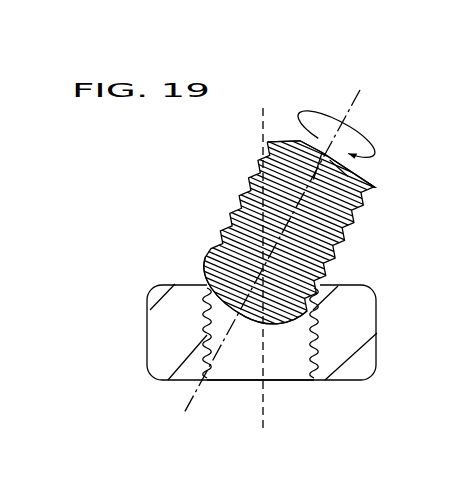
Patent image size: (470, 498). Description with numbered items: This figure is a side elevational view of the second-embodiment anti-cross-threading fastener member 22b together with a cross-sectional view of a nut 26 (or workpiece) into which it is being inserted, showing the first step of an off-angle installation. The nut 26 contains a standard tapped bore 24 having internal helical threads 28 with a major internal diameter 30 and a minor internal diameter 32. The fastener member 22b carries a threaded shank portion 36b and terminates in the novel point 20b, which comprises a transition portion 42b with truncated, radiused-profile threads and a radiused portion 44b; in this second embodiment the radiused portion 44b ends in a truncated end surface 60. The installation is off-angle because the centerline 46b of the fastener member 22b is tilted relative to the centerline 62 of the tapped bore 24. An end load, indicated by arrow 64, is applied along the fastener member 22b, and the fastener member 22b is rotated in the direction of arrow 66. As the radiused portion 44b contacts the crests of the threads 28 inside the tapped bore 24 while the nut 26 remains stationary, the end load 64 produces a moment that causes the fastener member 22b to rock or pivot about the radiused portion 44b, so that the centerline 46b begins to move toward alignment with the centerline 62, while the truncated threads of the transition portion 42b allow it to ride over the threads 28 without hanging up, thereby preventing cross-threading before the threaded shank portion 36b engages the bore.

The point 20b is at (281, 253).
The fastener member 22b is at (261, 218).
The tapped bore 24 is at (316, 366).
The nut 26 is at (364, 366).
The internal helical threads 28 is at (311, 340).
The major internal diameter 30 is at (204, 370).
The minor internal diameter 32 is at (206, 355).
The threaded shank portion 36b is at (252, 188).
The transition portion 42b is at (205, 262).
The radiused portion 44b is at (209, 300).
The centerline 46b is at (342, 142).
The truncated end surface 60 is at (258, 316).
The centerline 62 is at (278, 282).
The end load 64 is at (362, 91).
The rotation 66 is at (369, 140).